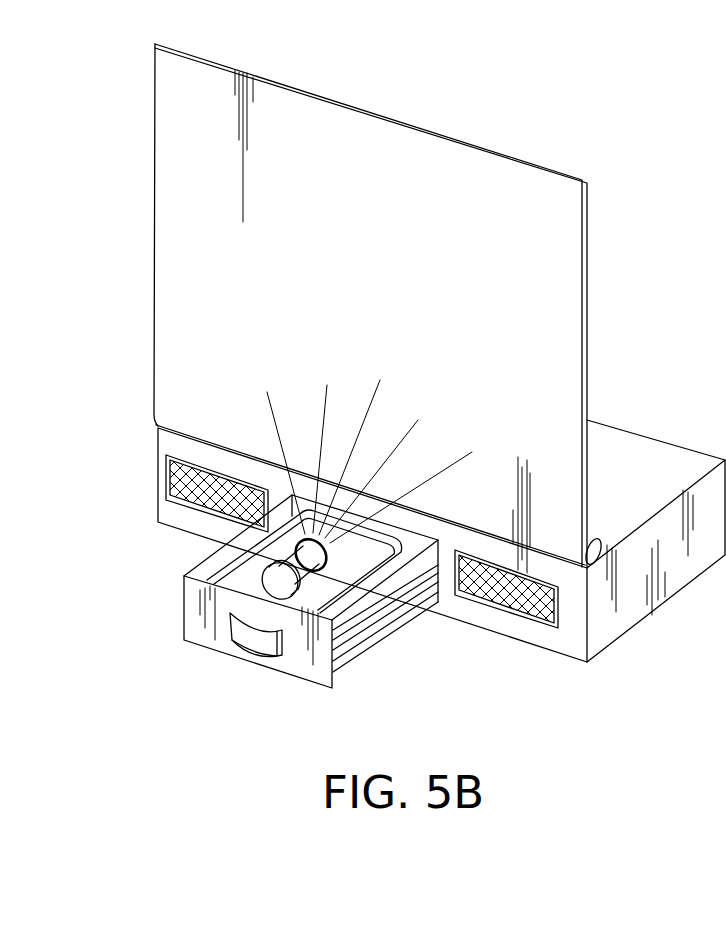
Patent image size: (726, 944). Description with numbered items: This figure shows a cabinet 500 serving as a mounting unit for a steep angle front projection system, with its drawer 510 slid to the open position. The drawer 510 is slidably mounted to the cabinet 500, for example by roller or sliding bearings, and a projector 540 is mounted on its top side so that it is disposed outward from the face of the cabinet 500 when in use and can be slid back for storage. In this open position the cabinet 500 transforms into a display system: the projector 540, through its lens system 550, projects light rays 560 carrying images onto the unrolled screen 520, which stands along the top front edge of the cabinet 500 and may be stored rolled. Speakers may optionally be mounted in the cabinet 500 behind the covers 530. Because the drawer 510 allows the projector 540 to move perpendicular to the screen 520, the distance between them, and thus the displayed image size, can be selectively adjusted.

The cabinet 500 is at (123, 268).
The drawer 510 is at (215, 633).
The screen 520 is at (596, 369).
The covers 530 is at (168, 498).
The projector 540 is at (357, 602).
The lens system 550 is at (278, 571).
The light rays 560 is at (383, 382).